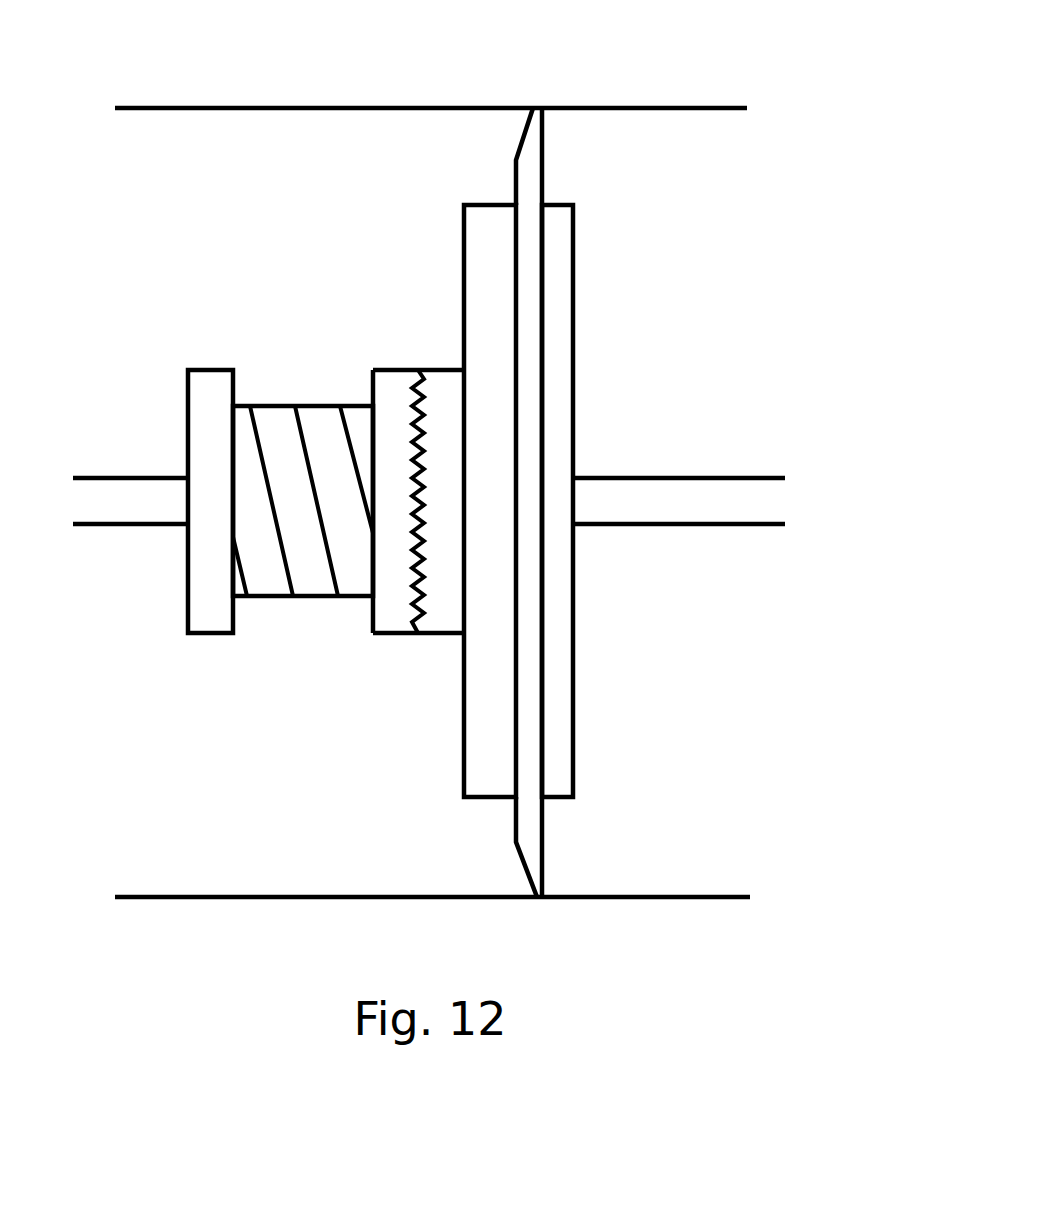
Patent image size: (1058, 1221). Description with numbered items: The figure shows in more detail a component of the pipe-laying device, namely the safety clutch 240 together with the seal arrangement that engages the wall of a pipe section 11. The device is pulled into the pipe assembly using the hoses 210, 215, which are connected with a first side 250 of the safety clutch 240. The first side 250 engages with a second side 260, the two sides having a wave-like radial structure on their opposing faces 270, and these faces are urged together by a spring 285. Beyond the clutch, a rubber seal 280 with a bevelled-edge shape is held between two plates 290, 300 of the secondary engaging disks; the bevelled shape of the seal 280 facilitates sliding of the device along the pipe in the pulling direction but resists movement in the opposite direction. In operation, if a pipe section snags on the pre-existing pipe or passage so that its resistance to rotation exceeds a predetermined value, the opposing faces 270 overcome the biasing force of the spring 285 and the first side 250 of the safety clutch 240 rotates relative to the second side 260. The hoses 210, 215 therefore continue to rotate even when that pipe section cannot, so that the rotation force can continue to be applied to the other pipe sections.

The pipe section 11 is at (650, 107).
The hose 210 is at (120, 478).
The hose 215 is at (128, 524).
The safety clutch 240 is at (326, 432).
The first side of the safety clutch 250 is at (303, 517).
The second side of the safety clutch 260 is at (462, 645).
The opposing faces 270 is at (417, 370).
The rubber seal 280 is at (542, 870).
The spring 285 is at (243, 447).
The plate 290 is at (483, 797).
The plate 300 is at (573, 783).